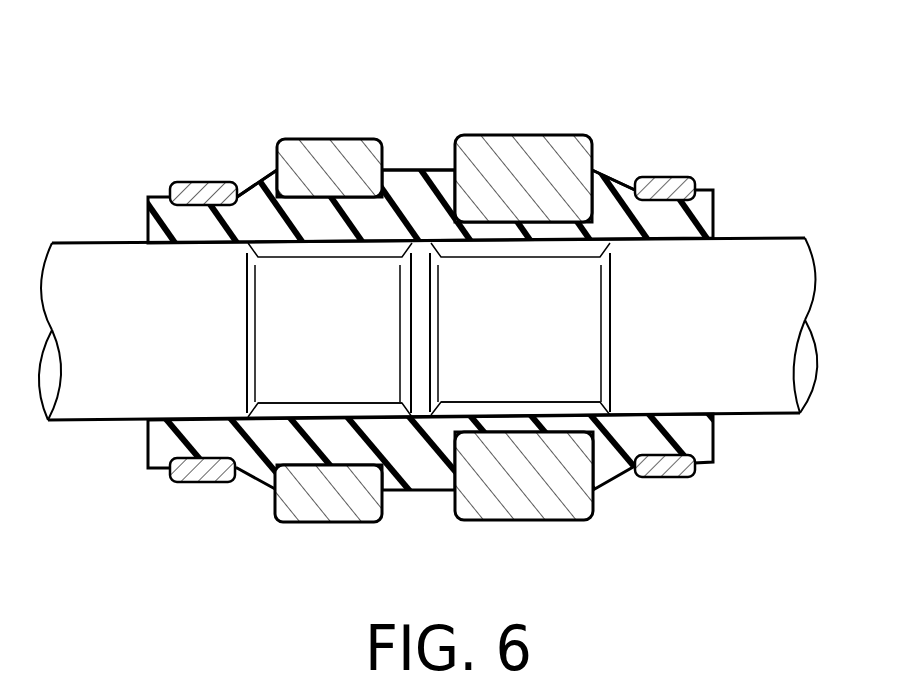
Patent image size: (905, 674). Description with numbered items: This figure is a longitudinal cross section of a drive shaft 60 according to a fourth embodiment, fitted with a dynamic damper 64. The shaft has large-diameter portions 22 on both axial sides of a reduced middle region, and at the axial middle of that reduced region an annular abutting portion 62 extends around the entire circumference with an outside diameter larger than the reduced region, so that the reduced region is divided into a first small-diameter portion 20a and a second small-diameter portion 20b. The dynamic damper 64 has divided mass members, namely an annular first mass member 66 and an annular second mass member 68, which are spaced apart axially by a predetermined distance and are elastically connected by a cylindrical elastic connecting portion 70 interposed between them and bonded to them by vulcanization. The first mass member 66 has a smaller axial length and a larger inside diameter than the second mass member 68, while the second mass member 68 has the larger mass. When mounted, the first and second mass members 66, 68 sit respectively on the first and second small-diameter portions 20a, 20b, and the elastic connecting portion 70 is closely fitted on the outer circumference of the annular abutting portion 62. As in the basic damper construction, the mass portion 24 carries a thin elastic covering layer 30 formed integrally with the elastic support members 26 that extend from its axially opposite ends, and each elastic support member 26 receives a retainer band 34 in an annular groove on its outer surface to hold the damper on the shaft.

The first small-diameter portion 20a is at (290, 380).
The second small-diameter portion 20b is at (473, 380).
The large-diameter portion 22 is at (120, 403).
The mass portion 24 is at (560, 114).
The elastic support member 26 is at (243, 205).
The elastic covering layer 30 is at (348, 437).
The retainer band 34 is at (194, 190).
The drive shaft 60 is at (790, 218).
The annular abutting portion 62 is at (423, 312).
The dynamic damper 64 is at (337, 102).
The first mass member 66 is at (322, 508).
The second mass member 68 is at (552, 507).
The elastic connecting portion 70 is at (402, 180).